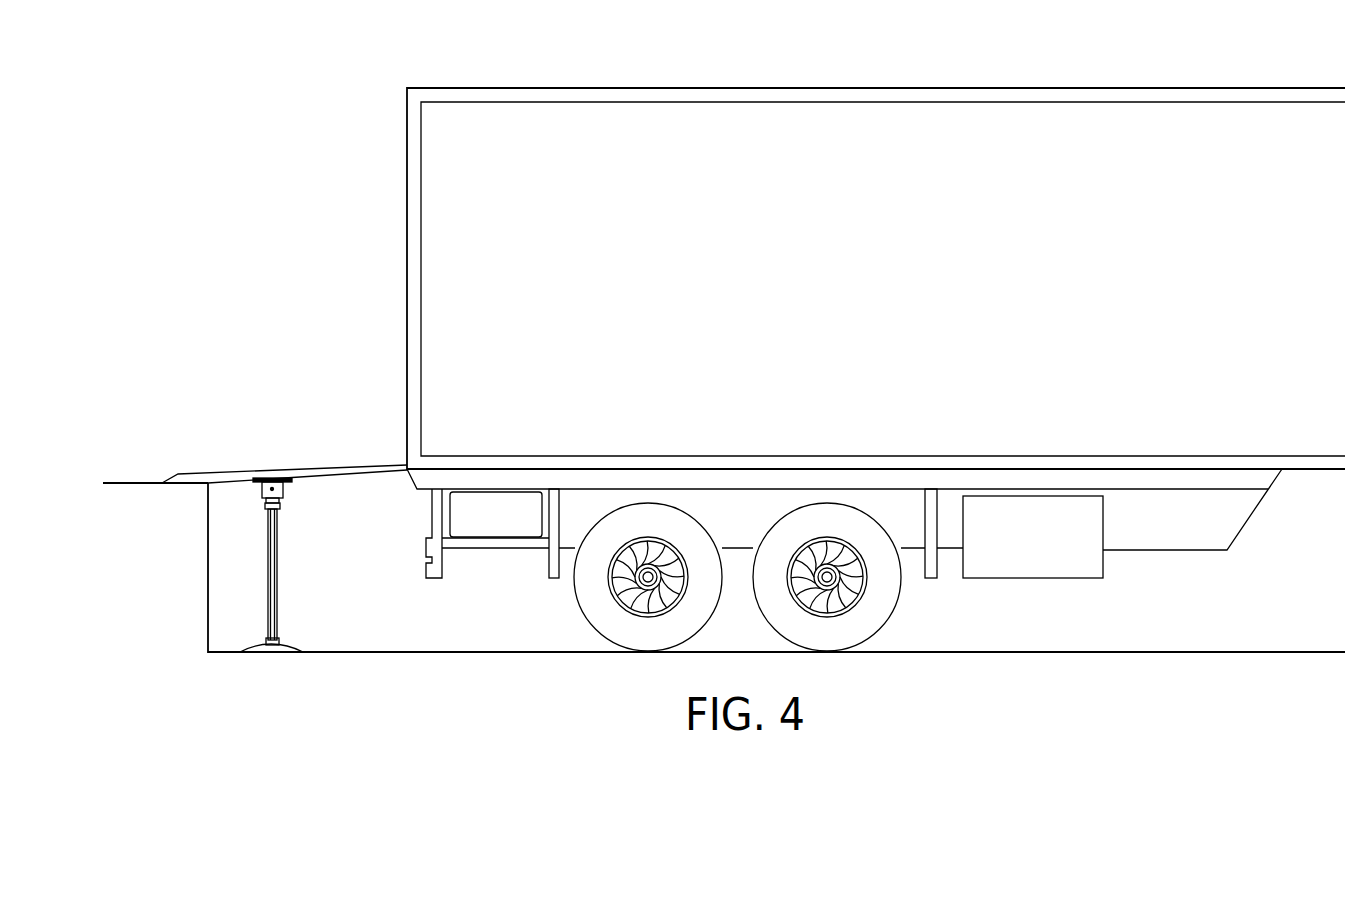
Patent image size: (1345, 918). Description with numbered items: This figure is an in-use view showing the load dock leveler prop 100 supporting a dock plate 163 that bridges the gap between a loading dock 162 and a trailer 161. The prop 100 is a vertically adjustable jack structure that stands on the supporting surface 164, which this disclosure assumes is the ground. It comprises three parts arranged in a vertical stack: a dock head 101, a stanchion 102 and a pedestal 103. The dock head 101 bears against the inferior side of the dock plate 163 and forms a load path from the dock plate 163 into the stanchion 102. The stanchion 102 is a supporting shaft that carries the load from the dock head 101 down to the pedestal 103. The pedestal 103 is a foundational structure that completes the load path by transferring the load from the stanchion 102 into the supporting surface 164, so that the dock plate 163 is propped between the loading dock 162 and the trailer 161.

The load dock leveler prop 100 is at (313, 617).
The dock head 101 is at (284, 487).
The stanchion 102 is at (277, 555).
The pedestal 103 is at (268, 652).
The trailer 161 is at (463, 88).
The loading dock 162 is at (138, 483).
The dock plate 163 is at (226, 470).
The supporting surface 164 is at (402, 652).